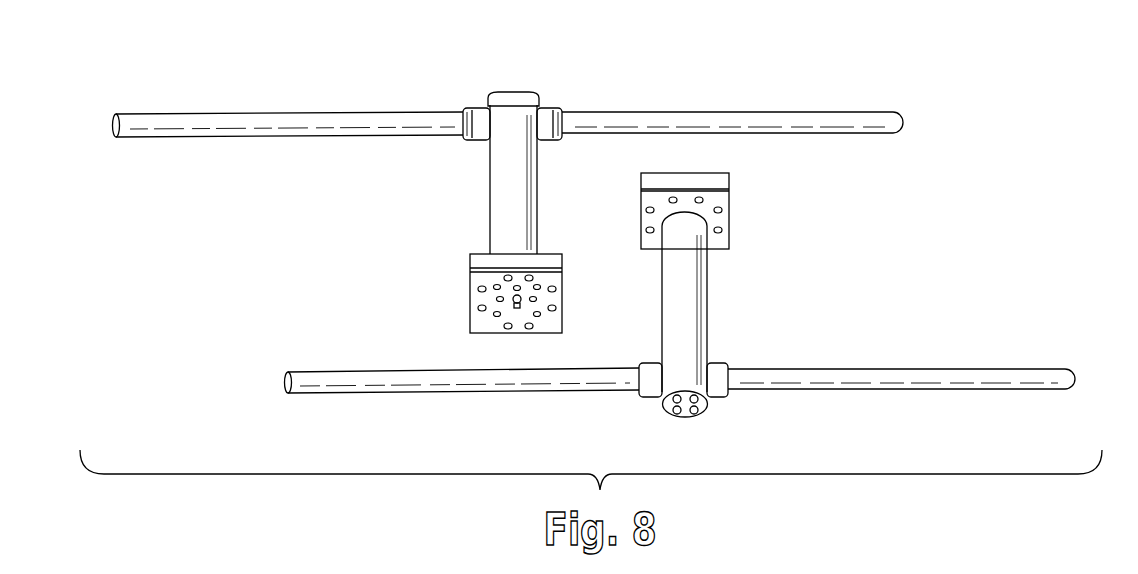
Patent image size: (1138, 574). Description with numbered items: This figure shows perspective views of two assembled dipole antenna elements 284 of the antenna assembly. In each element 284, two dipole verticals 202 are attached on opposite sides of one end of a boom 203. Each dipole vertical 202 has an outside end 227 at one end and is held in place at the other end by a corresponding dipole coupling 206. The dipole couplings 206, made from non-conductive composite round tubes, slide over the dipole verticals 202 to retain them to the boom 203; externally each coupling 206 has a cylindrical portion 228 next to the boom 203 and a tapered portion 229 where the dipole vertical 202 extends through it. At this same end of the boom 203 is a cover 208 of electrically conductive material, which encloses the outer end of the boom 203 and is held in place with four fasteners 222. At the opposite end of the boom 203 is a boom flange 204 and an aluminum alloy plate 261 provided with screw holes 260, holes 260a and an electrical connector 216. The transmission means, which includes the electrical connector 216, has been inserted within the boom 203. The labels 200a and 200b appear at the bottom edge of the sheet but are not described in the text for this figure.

The dipole vertical 202 is at (230, 115).
The outside end 227 is at (113, 117).
The boom 203 is at (540, 190).
The cover 208 is at (515, 94).
The dipole coupling 206 is at (455, 149).
The cylindrical portion 228 is at (480, 106).
The tapered portion 229 is at (468, 110).
The boom flange 204 is at (485, 258).
The aluminum alloy plate 261 is at (470, 290).
The screw holes 260 is at (722, 229).
The holes 260a is at (540, 312).
The electrical connector 216 is at (515, 302).
The fasteners 222 is at (703, 416).
The assembled dipole antenna element 284 is at (360, 221).
The second frame member 200b is at (235, 569).
The first frame member 200a is at (935, 569).